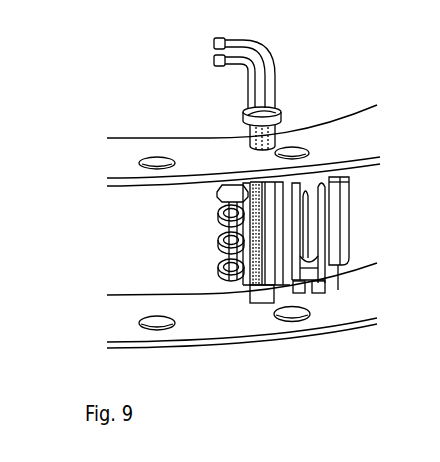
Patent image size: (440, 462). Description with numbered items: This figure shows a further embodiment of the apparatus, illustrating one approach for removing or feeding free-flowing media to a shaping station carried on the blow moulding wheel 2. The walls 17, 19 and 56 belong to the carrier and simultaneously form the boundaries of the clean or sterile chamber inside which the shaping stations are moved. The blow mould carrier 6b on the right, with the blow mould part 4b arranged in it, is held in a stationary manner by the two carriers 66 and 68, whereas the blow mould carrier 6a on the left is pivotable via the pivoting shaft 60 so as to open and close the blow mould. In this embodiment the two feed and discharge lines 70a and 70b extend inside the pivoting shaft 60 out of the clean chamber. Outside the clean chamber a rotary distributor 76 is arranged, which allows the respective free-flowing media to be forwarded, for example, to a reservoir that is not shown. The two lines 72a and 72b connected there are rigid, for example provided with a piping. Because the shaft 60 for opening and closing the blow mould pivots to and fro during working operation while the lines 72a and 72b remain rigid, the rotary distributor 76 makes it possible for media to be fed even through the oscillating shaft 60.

The blow moulding wheel 2 is at (182, 109).
The blow mould part 4b is at (317, 192).
The blow mould carrier 6a is at (243, 274).
The blow mould carrier 6b is at (340, 228).
The wall 17 is at (328, 133).
The wall 19 is at (178, 228).
The wall 56 is at (204, 309).
The pivoting shaft 60 is at (262, 297).
The carrier 66 is at (318, 291).
The carrier 68 is at (302, 291).
The feed and discharge line 70a is at (250, 135).
The feed and discharge line 70b is at (277, 131).
The line 72a is at (243, 42).
The line 72b is at (215, 59).
The rotary distributor 76 is at (245, 112).